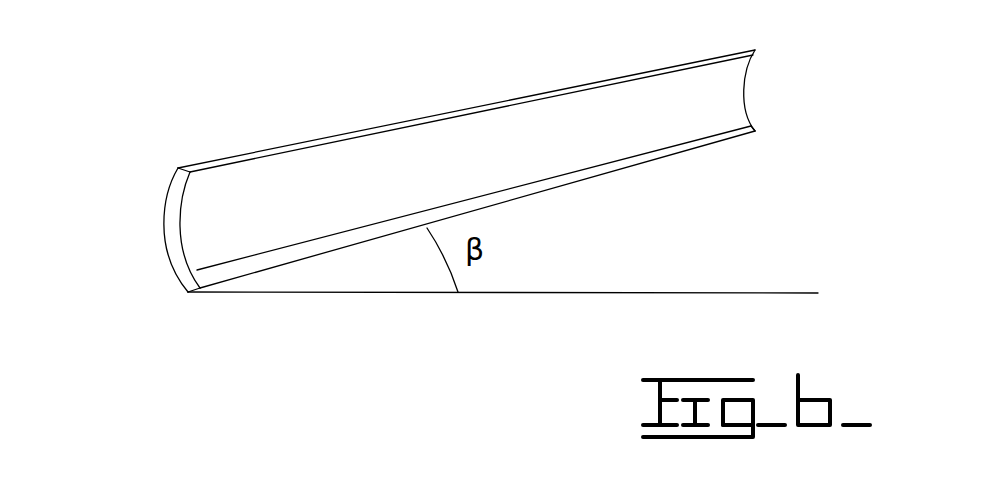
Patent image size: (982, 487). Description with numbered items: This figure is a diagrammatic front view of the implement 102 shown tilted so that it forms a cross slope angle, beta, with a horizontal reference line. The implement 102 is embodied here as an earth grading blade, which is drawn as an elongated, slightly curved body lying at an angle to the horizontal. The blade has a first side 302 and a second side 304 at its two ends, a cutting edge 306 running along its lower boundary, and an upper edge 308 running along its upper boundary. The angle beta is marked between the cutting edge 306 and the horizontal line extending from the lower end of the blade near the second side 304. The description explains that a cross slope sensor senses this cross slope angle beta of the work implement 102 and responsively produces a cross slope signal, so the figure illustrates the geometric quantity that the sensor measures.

The implement 102 is at (160, 278).
The first side 302 is at (462, 171).
The second side 304 is at (167, 242).
The cutting edge 306 is at (643, 165).
The upper edge 308 is at (372, 127).